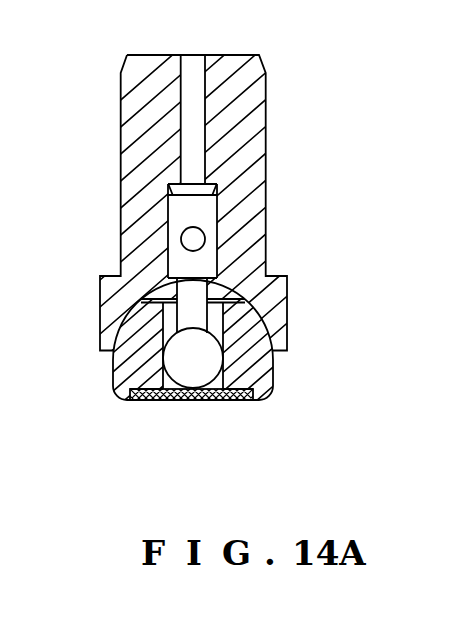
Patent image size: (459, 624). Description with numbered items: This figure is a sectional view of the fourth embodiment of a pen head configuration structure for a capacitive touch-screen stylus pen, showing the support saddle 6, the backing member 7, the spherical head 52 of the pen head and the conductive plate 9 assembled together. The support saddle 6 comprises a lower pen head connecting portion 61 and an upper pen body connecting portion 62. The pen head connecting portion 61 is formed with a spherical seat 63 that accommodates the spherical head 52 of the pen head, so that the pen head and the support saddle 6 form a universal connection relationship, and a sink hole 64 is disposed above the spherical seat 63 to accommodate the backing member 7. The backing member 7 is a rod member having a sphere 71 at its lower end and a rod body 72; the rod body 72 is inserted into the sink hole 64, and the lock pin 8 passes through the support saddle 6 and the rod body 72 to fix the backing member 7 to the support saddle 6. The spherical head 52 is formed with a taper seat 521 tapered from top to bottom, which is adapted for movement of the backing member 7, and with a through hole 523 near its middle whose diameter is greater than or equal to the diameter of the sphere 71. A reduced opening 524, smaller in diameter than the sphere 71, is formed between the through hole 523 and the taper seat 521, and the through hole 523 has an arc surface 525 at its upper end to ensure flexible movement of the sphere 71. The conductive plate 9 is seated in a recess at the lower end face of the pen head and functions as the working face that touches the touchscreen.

The support saddle 6 is at (298, 74).
The pen body connecting portion 62 is at (237, 135).
The pen head connecting portion 61 is at (118, 303).
The sink hole 64 is at (172, 192).
The spherical seat 63 is at (163, 288).
The rod body 72 is at (193, 263).
The lock pin 8 is at (193, 238).
The spherical head 52 is at (138, 323).
The taper seat 521 is at (122, 330).
The reduced opening 524 is at (138, 349).
The arc surface 525 is at (130, 384).
The through hole 523 is at (140, 400).
The sphere 71 is at (207, 353).
The backing member 7 is at (383, 243).
The conductive plate 9 is at (222, 400).